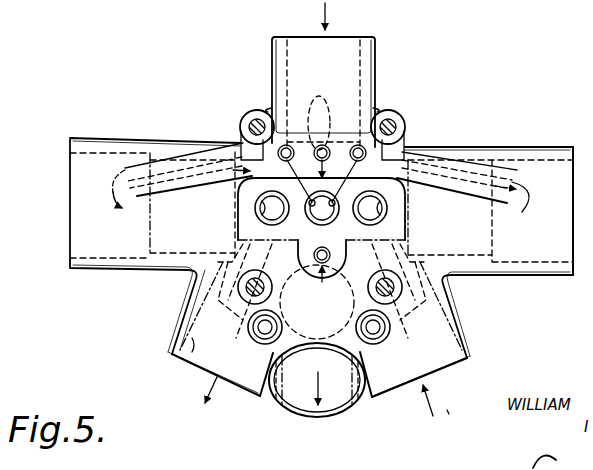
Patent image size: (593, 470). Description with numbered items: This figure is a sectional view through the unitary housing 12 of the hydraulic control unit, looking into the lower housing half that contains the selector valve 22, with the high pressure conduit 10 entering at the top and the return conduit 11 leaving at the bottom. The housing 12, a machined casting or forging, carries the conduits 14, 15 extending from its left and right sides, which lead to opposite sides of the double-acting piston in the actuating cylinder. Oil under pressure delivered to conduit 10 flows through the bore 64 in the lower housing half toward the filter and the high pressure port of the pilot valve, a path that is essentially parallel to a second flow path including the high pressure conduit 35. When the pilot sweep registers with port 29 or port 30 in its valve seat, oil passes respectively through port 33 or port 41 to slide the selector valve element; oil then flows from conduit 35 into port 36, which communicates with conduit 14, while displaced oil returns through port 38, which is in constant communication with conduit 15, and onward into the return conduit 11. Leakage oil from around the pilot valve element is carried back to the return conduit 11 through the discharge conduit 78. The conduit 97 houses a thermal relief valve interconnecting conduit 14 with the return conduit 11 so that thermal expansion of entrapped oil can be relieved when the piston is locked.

The high pressure conduit 10 is at (288, 55).
The return conduit 11 is at (297, 396).
The unitary housing 12 is at (484, 121).
The conduit 14 is at (192, 366).
The conduit 15 is at (440, 337).
The selector valve 22 is at (533, 145).
The port 29 is at (282, 218).
The port 30 is at (359, 218).
The port 33 is at (176, 188).
The high pressure conduit 35 is at (316, 148).
The port 36 is at (245, 238).
The port 38 is at (401, 244).
The port 41 is at (462, 172).
The bore 64 is at (324, 146).
The discharge conduit 78 is at (320, 264).
The conduit 97 is at (262, 330).